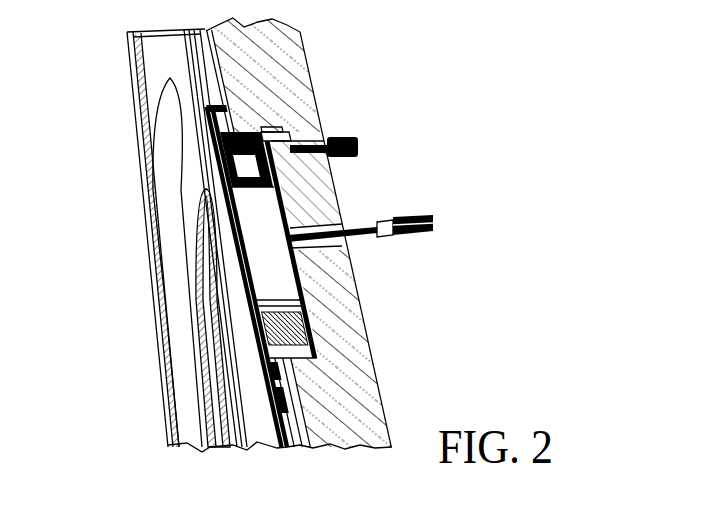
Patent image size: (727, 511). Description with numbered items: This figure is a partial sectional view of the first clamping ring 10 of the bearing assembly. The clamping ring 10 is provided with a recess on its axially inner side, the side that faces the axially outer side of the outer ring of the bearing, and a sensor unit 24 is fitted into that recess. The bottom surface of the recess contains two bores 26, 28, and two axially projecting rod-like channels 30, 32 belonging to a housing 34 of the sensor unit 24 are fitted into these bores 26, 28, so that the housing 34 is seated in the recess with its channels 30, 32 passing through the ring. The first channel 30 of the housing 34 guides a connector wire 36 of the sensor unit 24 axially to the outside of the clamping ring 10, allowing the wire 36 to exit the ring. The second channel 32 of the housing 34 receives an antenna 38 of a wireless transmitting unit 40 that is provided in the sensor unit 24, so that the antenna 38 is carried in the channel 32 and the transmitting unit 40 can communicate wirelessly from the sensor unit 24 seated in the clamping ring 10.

The first clamping ring 10 is at (280, 72).
The sensor unit 24 is at (270, 285).
The bore 26 is at (300, 134).
The bore 28 is at (323, 230).
The first channel 30 is at (332, 245).
The second channel 32 is at (353, 136).
The housing 34 is at (272, 325).
The connector wire 36 is at (403, 234).
The antenna 38 is at (357, 147).
The wireless transmitting unit 40 is at (253, 235).